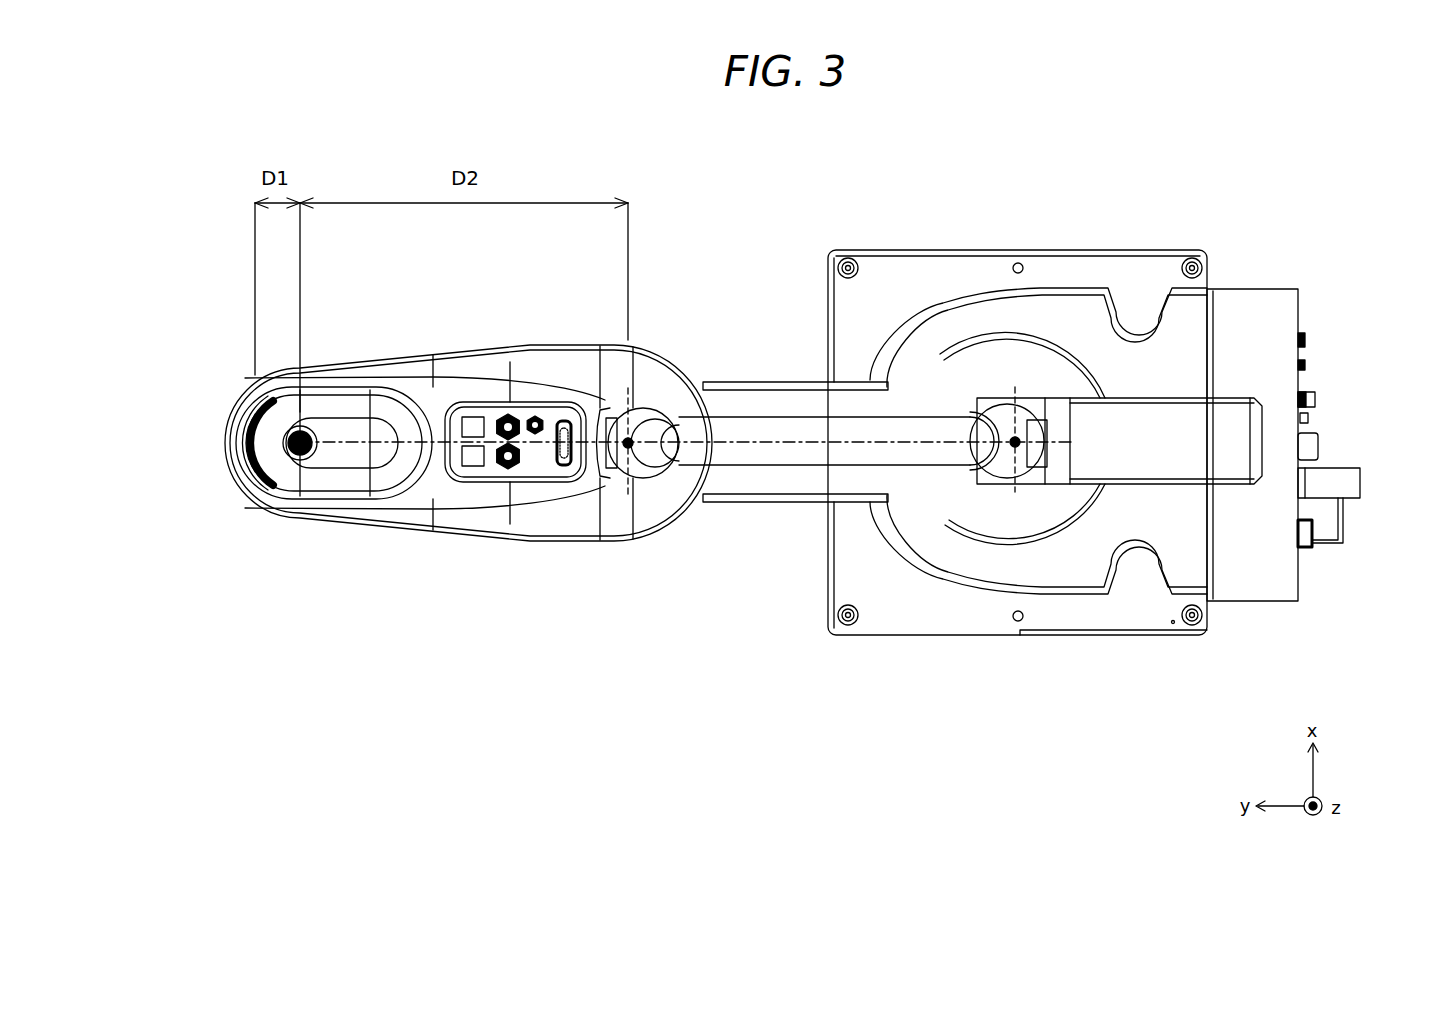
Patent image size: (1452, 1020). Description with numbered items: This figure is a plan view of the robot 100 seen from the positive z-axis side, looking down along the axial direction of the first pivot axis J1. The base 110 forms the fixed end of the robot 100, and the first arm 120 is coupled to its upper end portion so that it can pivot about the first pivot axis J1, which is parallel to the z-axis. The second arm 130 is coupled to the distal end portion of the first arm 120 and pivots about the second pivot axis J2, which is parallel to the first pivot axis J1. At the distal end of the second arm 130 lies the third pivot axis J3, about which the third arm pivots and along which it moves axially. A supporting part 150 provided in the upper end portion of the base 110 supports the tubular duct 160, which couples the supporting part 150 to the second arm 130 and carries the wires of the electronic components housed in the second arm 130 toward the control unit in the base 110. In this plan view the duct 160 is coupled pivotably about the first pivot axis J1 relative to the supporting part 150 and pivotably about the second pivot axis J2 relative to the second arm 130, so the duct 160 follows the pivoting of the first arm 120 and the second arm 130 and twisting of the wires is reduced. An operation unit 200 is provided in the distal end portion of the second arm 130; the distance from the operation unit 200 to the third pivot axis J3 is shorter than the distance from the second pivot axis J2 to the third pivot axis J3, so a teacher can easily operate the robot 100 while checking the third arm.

The robot 100 is at (1182, 198).
The base 110 is at (1245, 557).
The first arm 120 is at (777, 480).
The second arm 130 is at (432, 490).
The supporting part 150 is at (1215, 442).
The duct 160 is at (819, 440).
The operation unit 200 is at (247, 431).
The first pivot axis J1 is at (1012, 492).
The second pivot axis J2 is at (623, 480).
The third pivot axis J3 is at (296, 485).